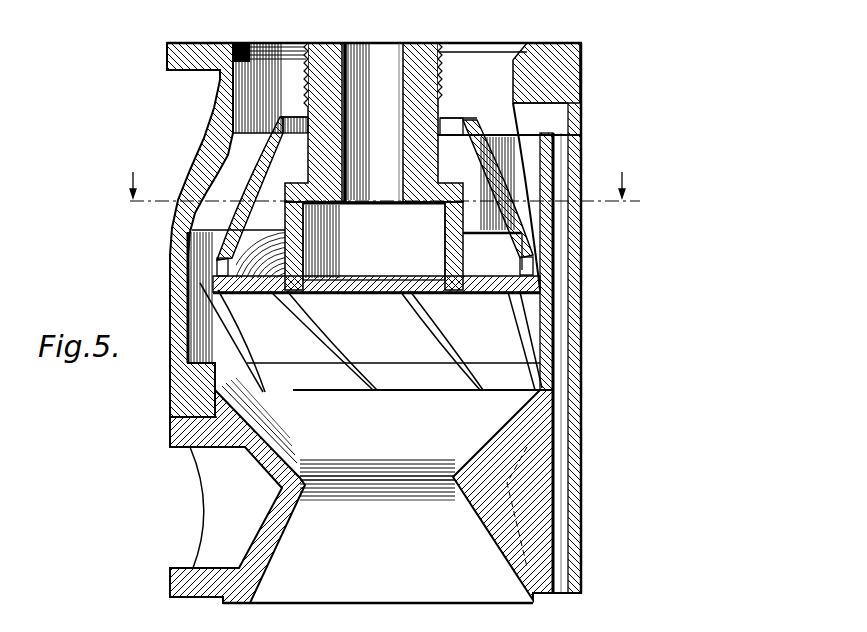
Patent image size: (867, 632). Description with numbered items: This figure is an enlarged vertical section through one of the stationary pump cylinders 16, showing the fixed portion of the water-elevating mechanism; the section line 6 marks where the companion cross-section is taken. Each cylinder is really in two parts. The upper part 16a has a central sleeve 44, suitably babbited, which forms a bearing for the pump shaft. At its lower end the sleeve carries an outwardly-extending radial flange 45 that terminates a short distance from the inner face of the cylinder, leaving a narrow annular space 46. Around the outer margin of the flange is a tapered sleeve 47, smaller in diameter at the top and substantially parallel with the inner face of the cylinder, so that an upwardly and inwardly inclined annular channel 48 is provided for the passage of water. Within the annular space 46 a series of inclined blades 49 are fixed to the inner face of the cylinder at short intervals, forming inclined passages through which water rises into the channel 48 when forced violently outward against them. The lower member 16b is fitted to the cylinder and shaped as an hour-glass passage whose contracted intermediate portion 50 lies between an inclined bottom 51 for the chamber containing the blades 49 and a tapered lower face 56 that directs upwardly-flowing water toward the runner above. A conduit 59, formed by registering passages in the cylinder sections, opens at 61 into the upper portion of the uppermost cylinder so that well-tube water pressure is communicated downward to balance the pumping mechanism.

The pump cylinder 16 is at (220, 93).
The upper part of the cylinder 16a is at (177, 262).
The lower member of the cylinder 16b is at (218, 500).
The central sleeve 44 is at (330, 57).
The radial flange 45 is at (263, 293).
The annular space 46 is at (200, 287).
The tapered sleeve 47 is at (260, 147).
The annular channel 48 is at (223, 160).
The inclined blades 49 is at (237, 350).
The contracted portion 50 is at (390, 483).
The inclined bottom 51 is at (277, 453).
The tapered lower face 56 is at (490, 550).
The conduit 59 is at (562, 360).
The upper end opening of the conduit 61 is at (557, 118).
The section line 6- 6 is at (375, 193).